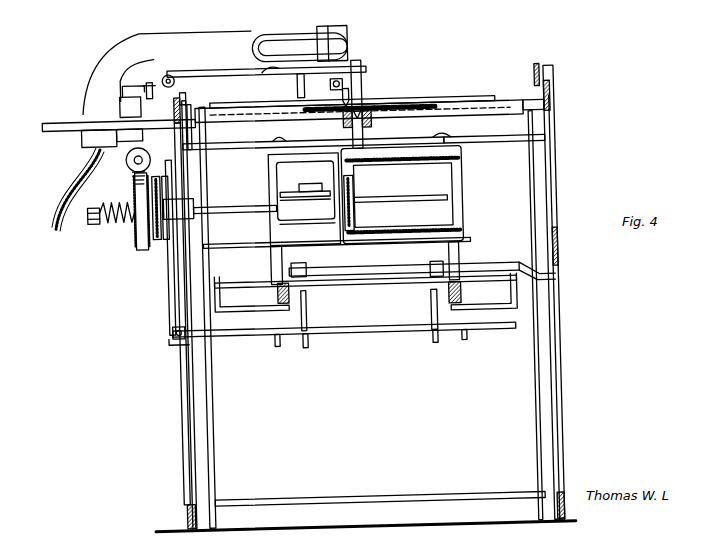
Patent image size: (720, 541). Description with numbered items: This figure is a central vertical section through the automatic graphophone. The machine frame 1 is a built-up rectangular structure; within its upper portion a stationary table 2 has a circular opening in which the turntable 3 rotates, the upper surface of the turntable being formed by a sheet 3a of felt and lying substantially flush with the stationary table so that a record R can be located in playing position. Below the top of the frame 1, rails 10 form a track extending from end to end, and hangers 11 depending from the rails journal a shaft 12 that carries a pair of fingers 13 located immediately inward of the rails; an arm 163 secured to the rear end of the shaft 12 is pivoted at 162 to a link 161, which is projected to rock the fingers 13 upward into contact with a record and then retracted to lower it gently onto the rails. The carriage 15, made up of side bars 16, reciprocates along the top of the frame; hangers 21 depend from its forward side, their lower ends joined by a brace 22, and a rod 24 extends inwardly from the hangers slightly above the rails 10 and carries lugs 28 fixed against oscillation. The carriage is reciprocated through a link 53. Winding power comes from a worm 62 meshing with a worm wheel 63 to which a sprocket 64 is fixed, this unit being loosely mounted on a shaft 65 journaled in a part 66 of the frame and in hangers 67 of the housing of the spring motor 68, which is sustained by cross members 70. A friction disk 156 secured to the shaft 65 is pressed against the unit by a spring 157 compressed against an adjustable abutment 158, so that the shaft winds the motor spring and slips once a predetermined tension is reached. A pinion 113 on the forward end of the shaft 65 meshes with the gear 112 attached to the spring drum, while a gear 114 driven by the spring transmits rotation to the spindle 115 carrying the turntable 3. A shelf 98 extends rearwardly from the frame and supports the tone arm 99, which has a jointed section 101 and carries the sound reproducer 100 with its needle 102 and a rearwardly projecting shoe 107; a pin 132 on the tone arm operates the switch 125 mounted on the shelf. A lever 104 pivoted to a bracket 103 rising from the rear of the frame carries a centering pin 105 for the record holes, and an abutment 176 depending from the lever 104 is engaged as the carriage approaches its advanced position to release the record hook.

The frame 1 is at (561, 364).
The stationary table 2 is at (541, 95).
The turntable 3 is at (506, 104).
The sheet of felt 3a is at (441, 104).
The record plate R is at (470, 99).
The rails 10 is at (277, 294).
The hangers 11 is at (277, 340).
The shaft 12 is at (380, 334).
The fingers 13 is at (308, 311).
The carriage 15 is at (547, 63).
The side bars 16 is at (185, 90).
The hangers 21 is at (563, 152).
The brace 22 is at (558, 284).
The rod 24 is at (494, 265).
The lugs 28 is at (312, 260).
The link 53 is at (153, 78).
The worm 62 is at (98, 157).
The worm wheel 63 is at (140, 246).
The sprocket 64 is at (157, 243).
The shaft 65 is at (240, 205).
The part of the frame 66 is at (190, 163).
The hangers 67 is at (286, 216).
The spring motor 68 is at (446, 181).
The cross members 70 is at (494, 140).
The shelf 98 is at (55, 116).
The tone arm 99 is at (181, 38).
The sound reproducer 100 is at (350, 30).
The jointed section 101 is at (296, 42).
The needle or stylus 102 is at (348, 88).
The bracket 103 is at (180, 68).
The lever 104 is at (368, 64).
The centering pin 105 is at (356, 95).
The shoe 107 is at (272, 74).
The gear 112 is at (442, 230).
The pinion 113 is at (358, 224).
The gear 114 is at (466, 160).
The spindle 115 is at (376, 124).
The switch 125 is at (124, 123).
The pin 132 is at (125, 86).
The friction disk 156 is at (168, 250).
The spring 157 is at (125, 200).
The abutment 158 is at (108, 222).
The link 161 is at (170, 306).
The pivot 162 is at (170, 333).
The arm 163 is at (177, 340).
The abutment 176 is at (301, 78).